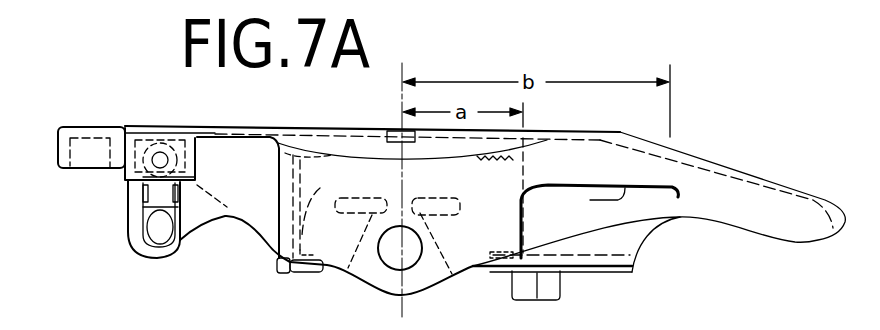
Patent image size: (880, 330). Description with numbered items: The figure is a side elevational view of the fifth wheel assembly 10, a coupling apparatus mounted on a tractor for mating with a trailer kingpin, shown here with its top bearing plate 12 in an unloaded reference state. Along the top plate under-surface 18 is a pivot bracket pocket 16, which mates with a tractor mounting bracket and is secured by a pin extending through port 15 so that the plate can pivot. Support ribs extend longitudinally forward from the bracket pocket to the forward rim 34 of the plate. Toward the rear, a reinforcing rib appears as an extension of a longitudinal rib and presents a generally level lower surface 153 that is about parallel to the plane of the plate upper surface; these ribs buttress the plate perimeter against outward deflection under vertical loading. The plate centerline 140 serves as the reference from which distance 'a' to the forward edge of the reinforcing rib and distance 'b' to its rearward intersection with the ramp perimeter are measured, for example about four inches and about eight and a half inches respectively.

The fifth wheel assembly 10 is at (58, 93).
The top bearing plate 12 is at (548, 132).
The port 15 is at (405, 245).
The pivot bracket pocket 16 is at (363, 283).
The top plate under-surface 18 is at (104, 140).
The forward rim 34 is at (57, 143).
The plate centerline 140 is at (403, 68).
The lower surface 153 is at (600, 200).